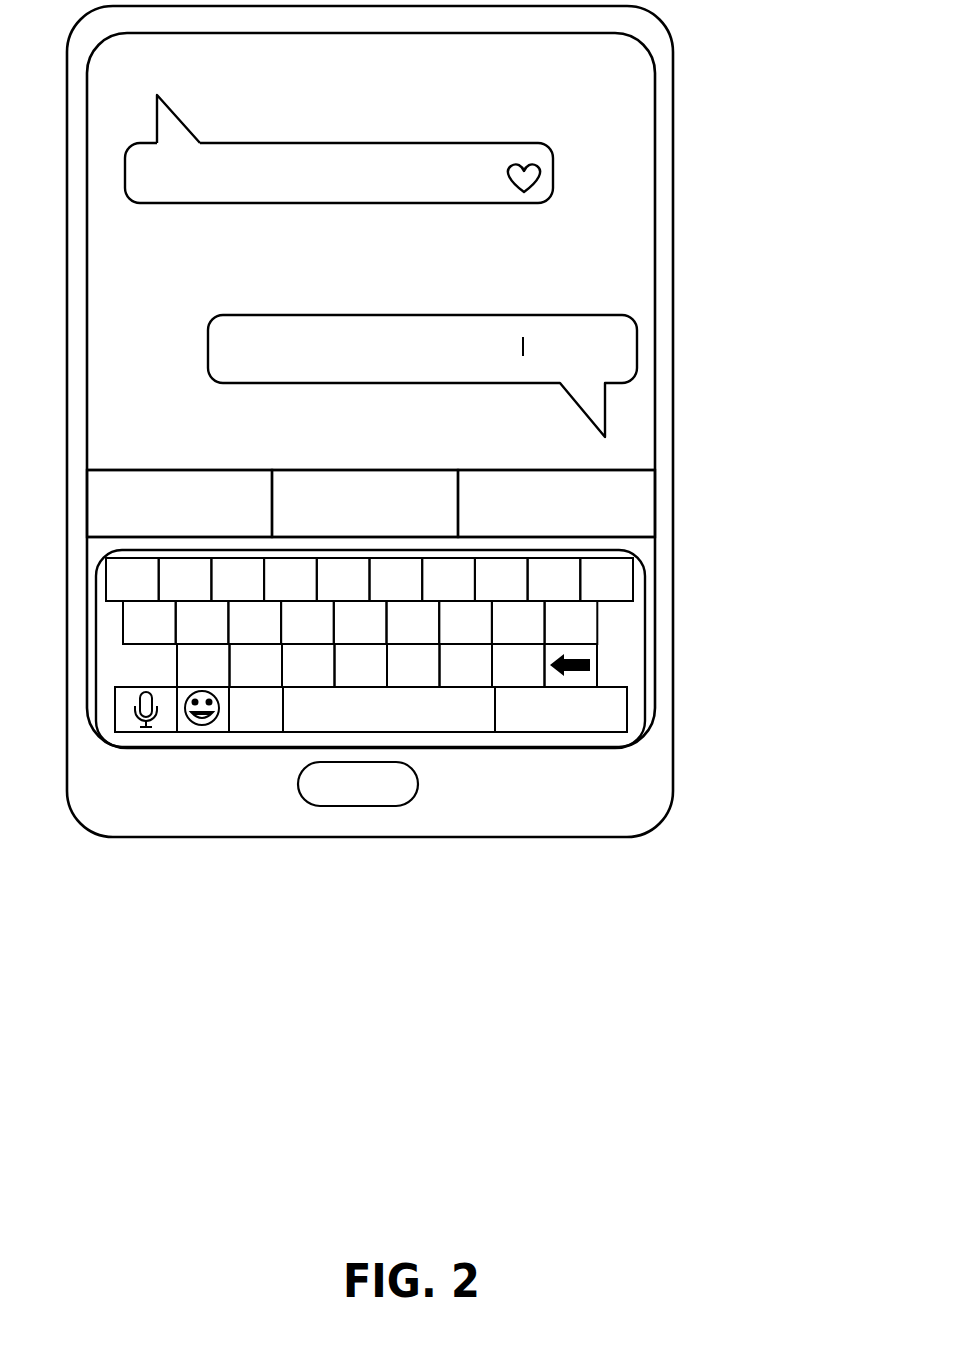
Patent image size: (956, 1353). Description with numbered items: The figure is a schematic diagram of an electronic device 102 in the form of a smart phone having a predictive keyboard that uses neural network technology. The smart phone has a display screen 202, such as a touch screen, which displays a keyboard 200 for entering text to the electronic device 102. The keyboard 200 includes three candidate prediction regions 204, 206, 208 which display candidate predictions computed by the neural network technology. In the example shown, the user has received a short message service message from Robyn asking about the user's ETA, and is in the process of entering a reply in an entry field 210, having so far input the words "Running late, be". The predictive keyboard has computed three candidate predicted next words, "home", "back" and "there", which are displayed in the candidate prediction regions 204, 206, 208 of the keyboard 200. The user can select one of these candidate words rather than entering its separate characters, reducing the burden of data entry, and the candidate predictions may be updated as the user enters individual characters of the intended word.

The electronic device 102 is at (673, 43).
The display screen 202 is at (638, 130).
The keyboard 200 is at (630, 641).
The candidate prediction region 204 is at (193, 480).
The candidate prediction region 206 is at (380, 480).
The candidate prediction region 208 is at (572, 480).
The entry field 210 is at (208, 345).